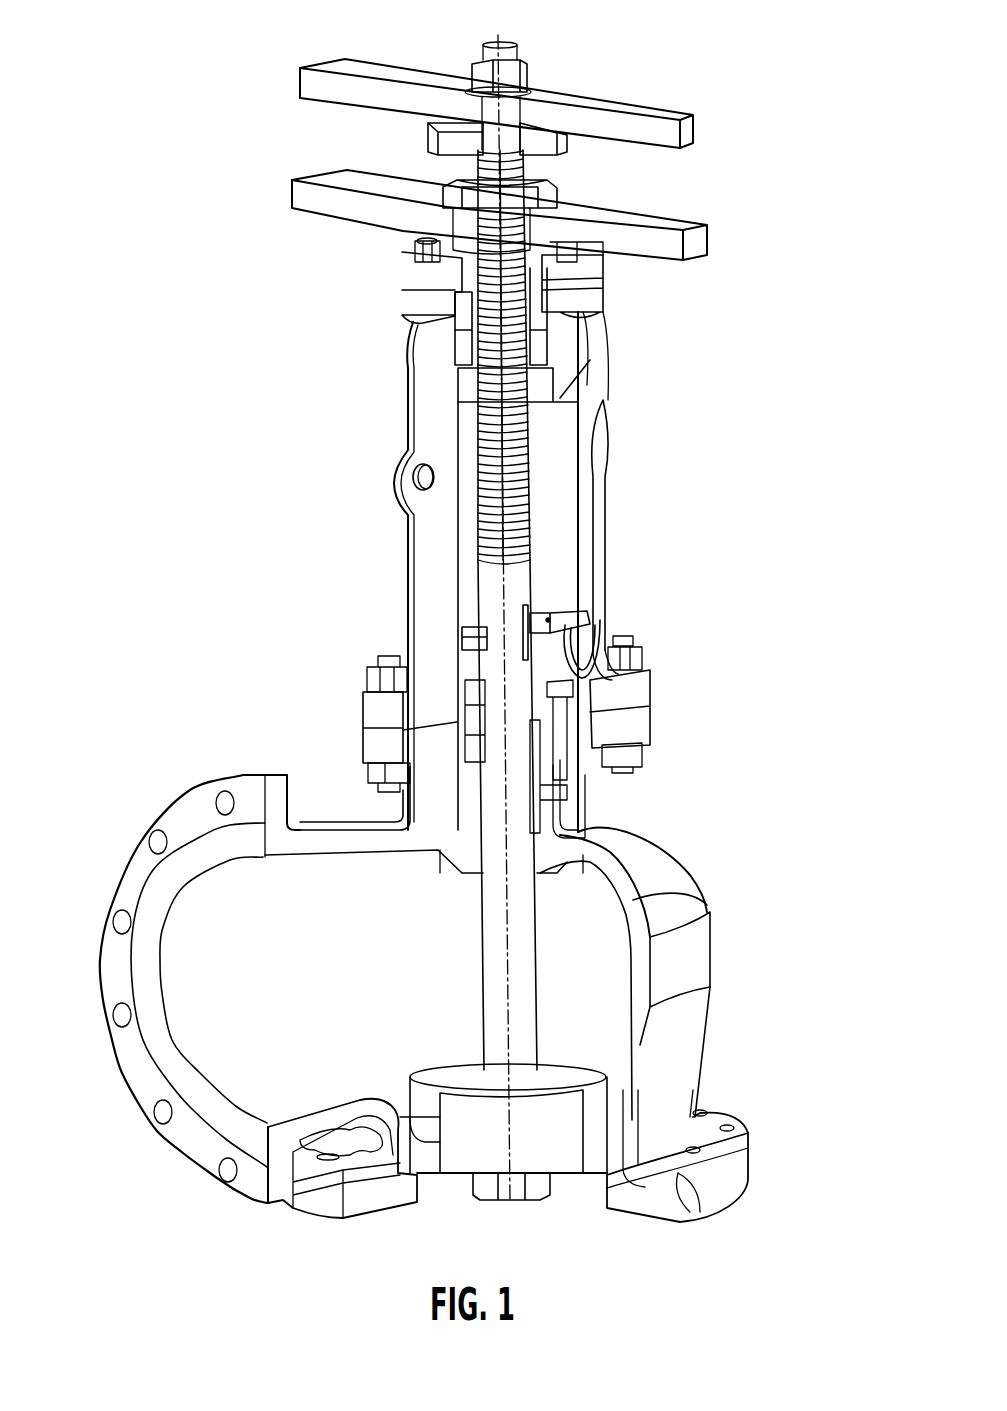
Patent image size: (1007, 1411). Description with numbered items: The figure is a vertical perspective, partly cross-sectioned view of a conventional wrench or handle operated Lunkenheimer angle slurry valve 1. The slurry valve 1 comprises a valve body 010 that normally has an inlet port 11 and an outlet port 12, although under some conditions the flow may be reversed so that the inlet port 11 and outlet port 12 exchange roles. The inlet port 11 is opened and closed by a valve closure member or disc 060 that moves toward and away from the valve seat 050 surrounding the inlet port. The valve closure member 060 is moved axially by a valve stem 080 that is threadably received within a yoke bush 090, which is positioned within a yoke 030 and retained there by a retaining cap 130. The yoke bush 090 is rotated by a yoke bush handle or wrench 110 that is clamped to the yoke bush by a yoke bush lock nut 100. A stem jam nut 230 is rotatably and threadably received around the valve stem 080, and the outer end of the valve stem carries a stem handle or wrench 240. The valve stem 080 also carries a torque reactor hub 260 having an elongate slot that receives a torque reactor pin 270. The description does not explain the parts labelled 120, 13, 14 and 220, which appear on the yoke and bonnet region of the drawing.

The slurry valve 1 is at (335, 405).
The stem handle 240 is at (593, 113).
The stem jam nut 230 is at (690, 118).
The yoke bush lock nut 100 is at (580, 197).
The yoke bush handle 110 is at (660, 217).
The retaining cap 130 is at (418, 280).
The right yoke nut 120 is at (565, 345).
The yoke bush 090 is at (560, 398).
The bonnet boss with hole 13 is at (408, 453).
The yoke 030 is at (567, 542).
The valve stem 080 is at (487, 580).
The stem clamp 14 is at (530, 618).
The torque reactor hub 260 is at (464, 626).
The torque reactor pin 270 is at (560, 637).
The bonnet bolt 220 is at (370, 688).
The valve body 010 is at (632, 900).
The outlet port 12 is at (213, 1035).
The valve closure member 060 is at (548, 1110).
The valve seat 050 is at (660, 1203).
The inlet port 11 is at (573, 1197).